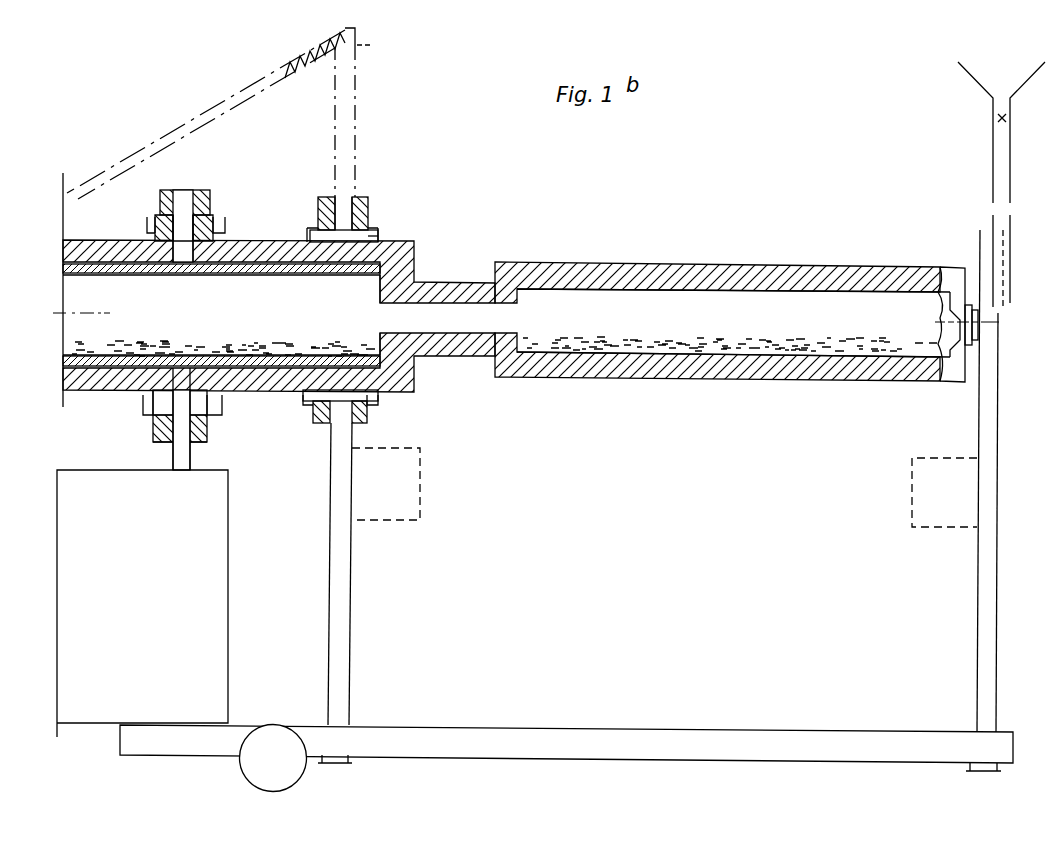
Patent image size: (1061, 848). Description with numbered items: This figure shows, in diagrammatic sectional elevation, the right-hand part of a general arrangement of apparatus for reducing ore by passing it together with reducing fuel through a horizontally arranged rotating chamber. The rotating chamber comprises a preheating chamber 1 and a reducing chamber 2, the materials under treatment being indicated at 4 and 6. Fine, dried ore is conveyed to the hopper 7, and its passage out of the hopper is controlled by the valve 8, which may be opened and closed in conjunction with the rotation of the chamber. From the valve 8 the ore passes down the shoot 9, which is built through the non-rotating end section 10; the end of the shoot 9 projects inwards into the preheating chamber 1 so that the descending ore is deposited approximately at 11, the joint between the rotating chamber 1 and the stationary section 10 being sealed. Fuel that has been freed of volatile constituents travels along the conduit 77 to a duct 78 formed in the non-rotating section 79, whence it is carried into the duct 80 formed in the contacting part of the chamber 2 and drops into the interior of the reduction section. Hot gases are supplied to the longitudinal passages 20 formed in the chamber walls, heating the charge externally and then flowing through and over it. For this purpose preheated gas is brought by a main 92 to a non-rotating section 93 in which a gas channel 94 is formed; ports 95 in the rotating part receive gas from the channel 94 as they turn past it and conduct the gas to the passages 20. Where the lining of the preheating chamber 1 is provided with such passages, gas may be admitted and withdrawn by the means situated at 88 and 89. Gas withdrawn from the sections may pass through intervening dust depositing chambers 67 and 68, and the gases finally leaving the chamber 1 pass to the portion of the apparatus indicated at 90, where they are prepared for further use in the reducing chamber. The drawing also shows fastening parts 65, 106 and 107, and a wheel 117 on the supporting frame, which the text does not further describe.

The preheating chamber 1 is at (738, 323).
The reducing chamber 2 is at (237, 315).
The material 4 is at (185, 190).
The material 6 is at (317, 347).
The hopper 7 is at (1002, 85).
The valve 8 is at (343, 196).
The shoot 9 is at (977, 320).
The non-rotating end section 10 is at (95, 314).
The ore deposit point 11 is at (950, 337).
The longitudinal passages 20 is at (98, 260).
The nut 65 is at (367, 240).
The dust depositing chamber 67 is at (402, 481).
The dust depositing chamber 68 is at (928, 489).
The conduit 77 is at (190, 120).
The duct 78 is at (318, 212).
The non-rotating section 79 is at (366, 201).
The duct 80 is at (352, 242).
The gas admission and withdrawal means 88 is at (498, 263).
The gas admission and withdrawal means 89 is at (884, 270).
The gas preparation apparatus 90 is at (142, 603).
The main 92 is at (181, 443).
The non-rotating section 93 is at (160, 428).
The gas channel 94 is at (185, 421).
The ports 95 is at (181, 383).
The nut 106 is at (367, 408).
The flange 107 is at (150, 393).
The wheel 117 is at (265, 748).